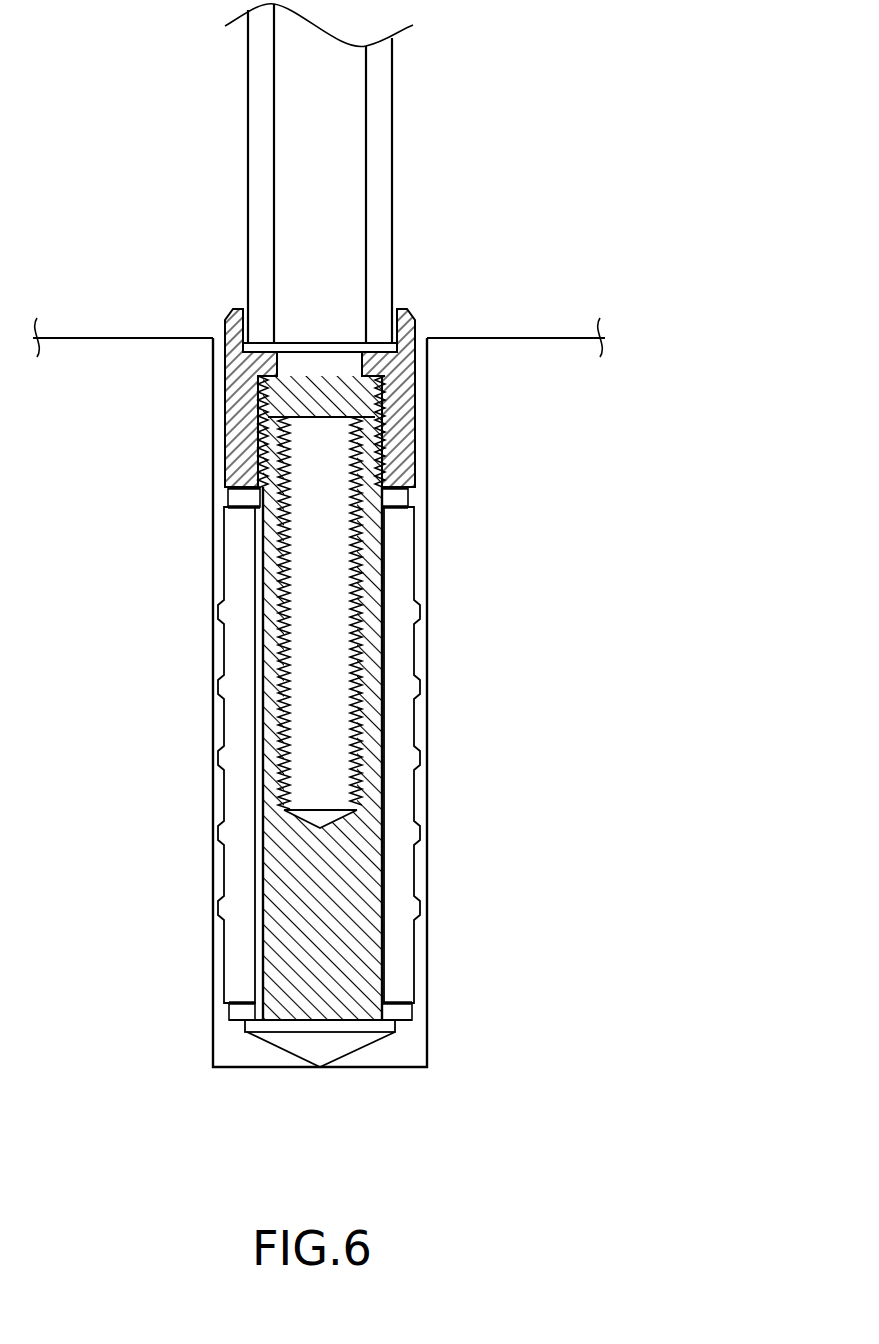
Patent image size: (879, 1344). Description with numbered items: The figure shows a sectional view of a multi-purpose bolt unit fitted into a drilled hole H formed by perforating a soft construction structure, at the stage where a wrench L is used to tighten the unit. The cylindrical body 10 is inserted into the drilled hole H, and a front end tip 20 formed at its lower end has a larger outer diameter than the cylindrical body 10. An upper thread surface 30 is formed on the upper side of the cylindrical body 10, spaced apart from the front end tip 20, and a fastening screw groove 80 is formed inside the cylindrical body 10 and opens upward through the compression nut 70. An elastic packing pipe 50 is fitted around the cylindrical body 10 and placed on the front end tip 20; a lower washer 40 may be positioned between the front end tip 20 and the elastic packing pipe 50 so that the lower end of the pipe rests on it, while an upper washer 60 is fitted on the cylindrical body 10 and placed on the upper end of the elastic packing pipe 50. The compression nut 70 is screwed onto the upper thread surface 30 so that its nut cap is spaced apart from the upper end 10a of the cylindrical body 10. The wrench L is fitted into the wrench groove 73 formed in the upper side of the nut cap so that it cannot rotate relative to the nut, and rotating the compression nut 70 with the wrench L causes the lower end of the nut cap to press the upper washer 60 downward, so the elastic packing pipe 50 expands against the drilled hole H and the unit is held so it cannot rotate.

The wrench L is at (348, 146).
The drilled hole H is at (247, 1053).
The wrench groove 73 is at (383, 318).
The compression nut 70 is at (398, 367).
The upper end of the cylindrical body 10a is at (380, 393).
The upper thread surface 30 is at (387, 448).
The upper washer 60 is at (407, 498).
The elastic packing pipe 50 is at (400, 656).
The fastening screw groove 80 is at (343, 745).
The cylindrical body 10 is at (343, 887).
The lower washer 40 is at (403, 1012).
The front end tip 20 is at (345, 1046).